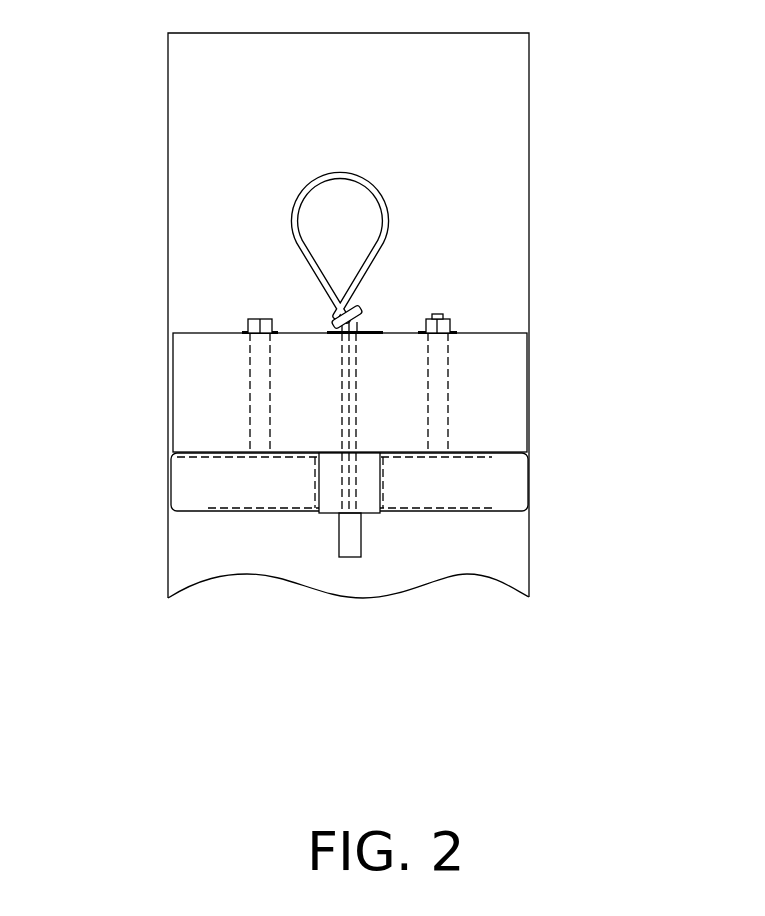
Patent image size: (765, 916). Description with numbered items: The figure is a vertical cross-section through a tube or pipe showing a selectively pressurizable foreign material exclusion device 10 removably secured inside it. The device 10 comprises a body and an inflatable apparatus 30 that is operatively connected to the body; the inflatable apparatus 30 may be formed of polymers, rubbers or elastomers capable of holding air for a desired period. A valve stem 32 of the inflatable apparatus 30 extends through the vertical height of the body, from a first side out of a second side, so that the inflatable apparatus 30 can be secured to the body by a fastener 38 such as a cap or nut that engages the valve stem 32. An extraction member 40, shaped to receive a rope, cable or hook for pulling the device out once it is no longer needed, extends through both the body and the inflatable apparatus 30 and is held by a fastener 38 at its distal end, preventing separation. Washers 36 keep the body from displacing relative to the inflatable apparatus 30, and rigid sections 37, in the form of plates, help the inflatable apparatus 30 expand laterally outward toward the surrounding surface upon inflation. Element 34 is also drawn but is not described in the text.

The selectively pressurizable foreign material exclusion device 10 is at (488, 242).
The inflatable apparatus 30 is at (436, 487).
The valve stem 32 is at (272, 392).
The bolt 34 is at (552, 383).
The washers 36 is at (403, 513).
The rigid sections 37 is at (254, 526).
The fastener 38 is at (282, 441).
The extraction member 40 is at (311, 293).